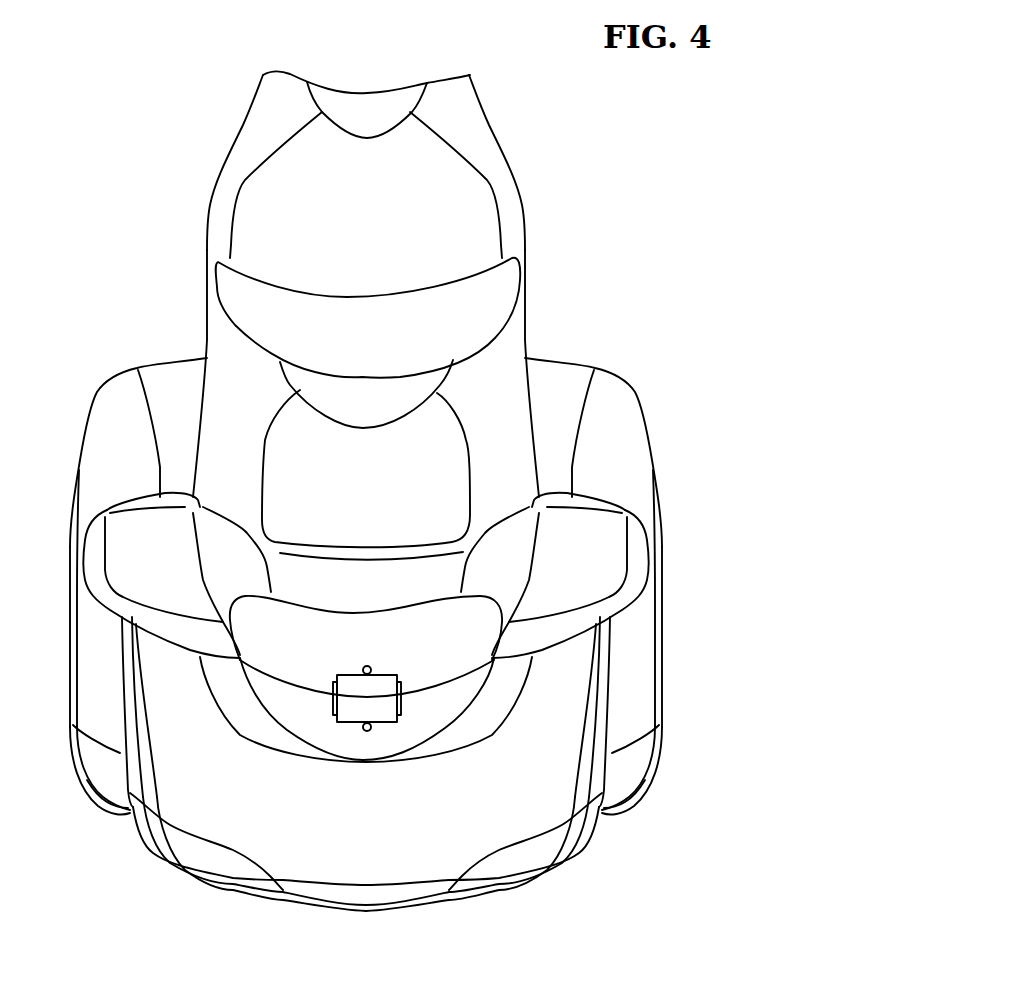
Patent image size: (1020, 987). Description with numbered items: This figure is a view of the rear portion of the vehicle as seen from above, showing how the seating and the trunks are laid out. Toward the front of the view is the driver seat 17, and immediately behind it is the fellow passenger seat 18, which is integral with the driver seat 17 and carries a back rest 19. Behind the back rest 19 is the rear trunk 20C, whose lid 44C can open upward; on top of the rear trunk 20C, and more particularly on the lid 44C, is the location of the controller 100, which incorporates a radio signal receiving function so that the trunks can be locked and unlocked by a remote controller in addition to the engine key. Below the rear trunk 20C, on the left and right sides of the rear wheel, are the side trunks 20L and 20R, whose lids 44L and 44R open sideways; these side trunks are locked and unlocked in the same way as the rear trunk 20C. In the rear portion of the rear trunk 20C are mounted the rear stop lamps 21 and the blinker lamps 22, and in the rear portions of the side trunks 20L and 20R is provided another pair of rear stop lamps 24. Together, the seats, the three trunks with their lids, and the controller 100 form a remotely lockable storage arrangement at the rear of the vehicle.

The driver seat 17 is at (395, 235).
The fellow passenger seat 18 is at (390, 495).
The back rest 19 is at (385, 658).
The controller 100 is at (358, 709).
The lid of left side trunk 44L is at (95, 692).
The lid of right side trunk 44R is at (645, 688).
The lid of rear trunk 44C is at (408, 842).
The left side trunk 20L is at (73, 752).
The right side trunk 20R is at (664, 730).
The rear trunk 20C is at (420, 867).
The rear stop lamps 24 is at (100, 778).
The rear stop lamps 21 is at (364, 864).
The blinker lamps 22 is at (182, 850).